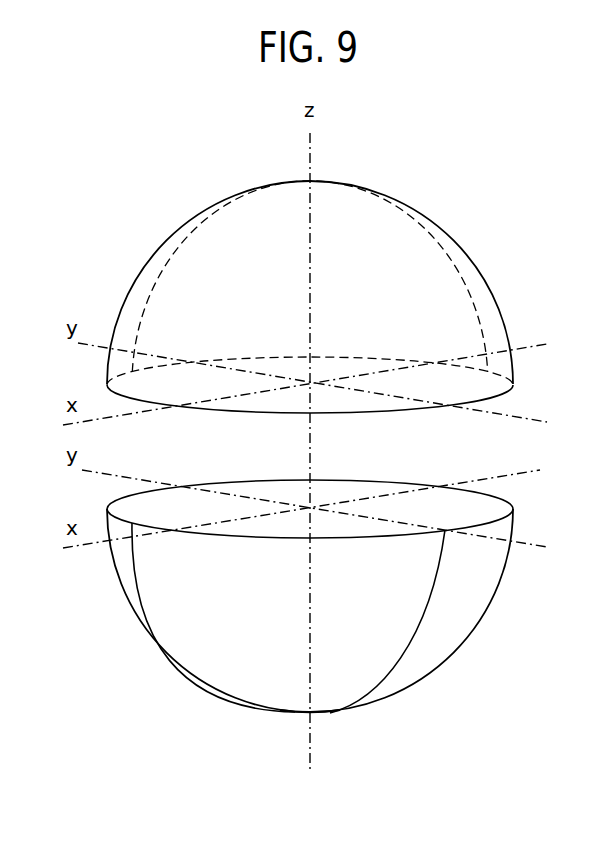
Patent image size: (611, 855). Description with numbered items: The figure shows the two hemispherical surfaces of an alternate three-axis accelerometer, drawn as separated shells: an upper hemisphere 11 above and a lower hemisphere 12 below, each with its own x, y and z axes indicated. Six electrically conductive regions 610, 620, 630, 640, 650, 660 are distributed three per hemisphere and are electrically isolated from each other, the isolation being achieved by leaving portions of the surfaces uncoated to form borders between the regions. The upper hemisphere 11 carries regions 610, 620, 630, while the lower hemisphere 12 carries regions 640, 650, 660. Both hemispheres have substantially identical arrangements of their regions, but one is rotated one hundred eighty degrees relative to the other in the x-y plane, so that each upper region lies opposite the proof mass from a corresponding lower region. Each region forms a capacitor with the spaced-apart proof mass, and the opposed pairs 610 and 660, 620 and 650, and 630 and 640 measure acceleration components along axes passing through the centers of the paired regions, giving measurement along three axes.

The upper hemisphere 11 is at (308, 266).
The lower hemisphere 12 is at (314, 631).
The electrically conductive region 610 is at (343, 202).
The electrically conductive region 620 is at (144, 265).
The electrically conductive region 630 is at (497, 300).
The electrically conductive region 640 is at (152, 643).
The electrically conductive region 650 is at (485, 613).
The electrically conductive region 660 is at (336, 700).